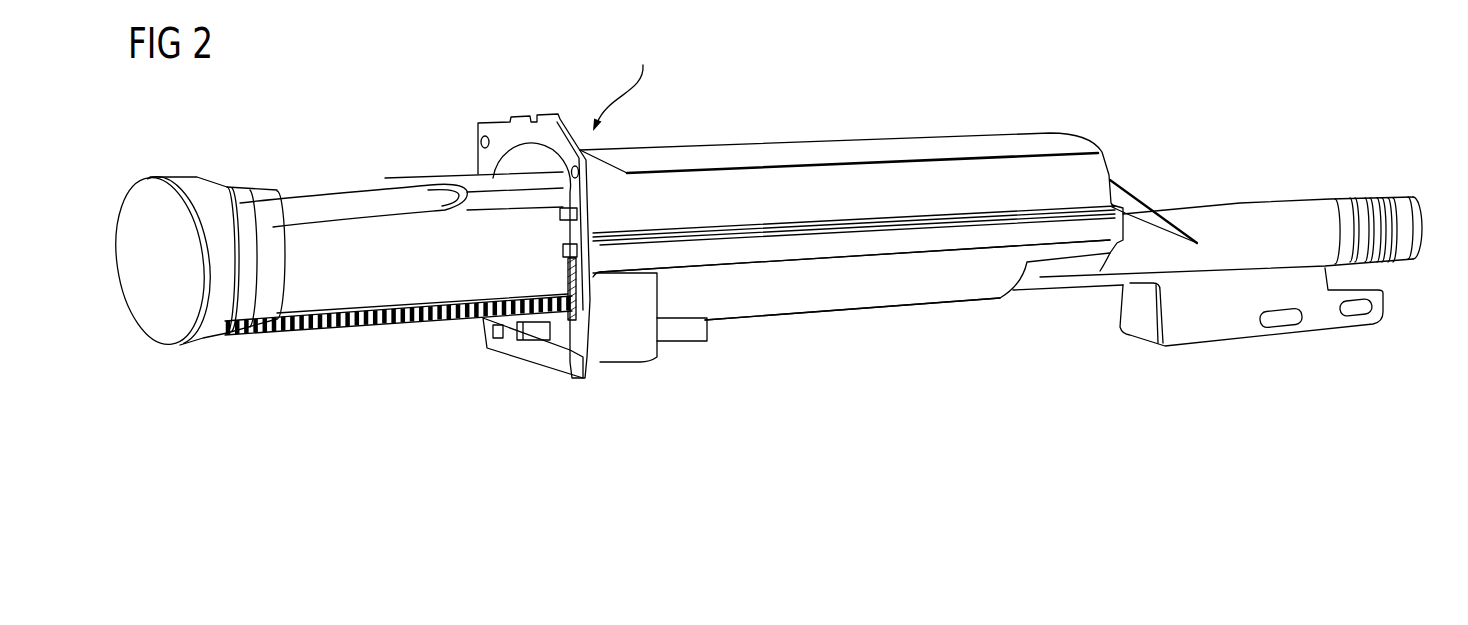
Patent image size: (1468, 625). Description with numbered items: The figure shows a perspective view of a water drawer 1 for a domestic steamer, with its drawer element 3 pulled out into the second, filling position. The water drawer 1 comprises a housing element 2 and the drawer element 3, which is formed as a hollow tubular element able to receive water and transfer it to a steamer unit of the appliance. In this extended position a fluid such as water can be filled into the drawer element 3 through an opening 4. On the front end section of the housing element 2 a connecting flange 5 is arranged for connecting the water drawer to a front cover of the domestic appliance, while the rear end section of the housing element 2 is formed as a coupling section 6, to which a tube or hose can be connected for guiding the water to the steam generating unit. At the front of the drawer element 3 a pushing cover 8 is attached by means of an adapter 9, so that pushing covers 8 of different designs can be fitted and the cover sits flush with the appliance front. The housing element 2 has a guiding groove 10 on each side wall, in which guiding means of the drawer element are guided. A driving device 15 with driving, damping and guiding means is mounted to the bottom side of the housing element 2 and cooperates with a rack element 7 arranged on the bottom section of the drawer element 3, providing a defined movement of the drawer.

The water drawer 1 is at (877, 100).
The housing element 2 is at (997, 187).
The drawer element 3 is at (490, 240).
The opening 4 is at (307, 210).
The connecting flange 5 is at (503, 147).
The coupling section 6 is at (1400, 218).
The rack element 7 is at (393, 328).
The pushing cover 8 is at (150, 307).
The adapter 9 is at (227, 203).
The guiding groove 10 is at (888, 242).
The driving device 15 is at (583, 367).